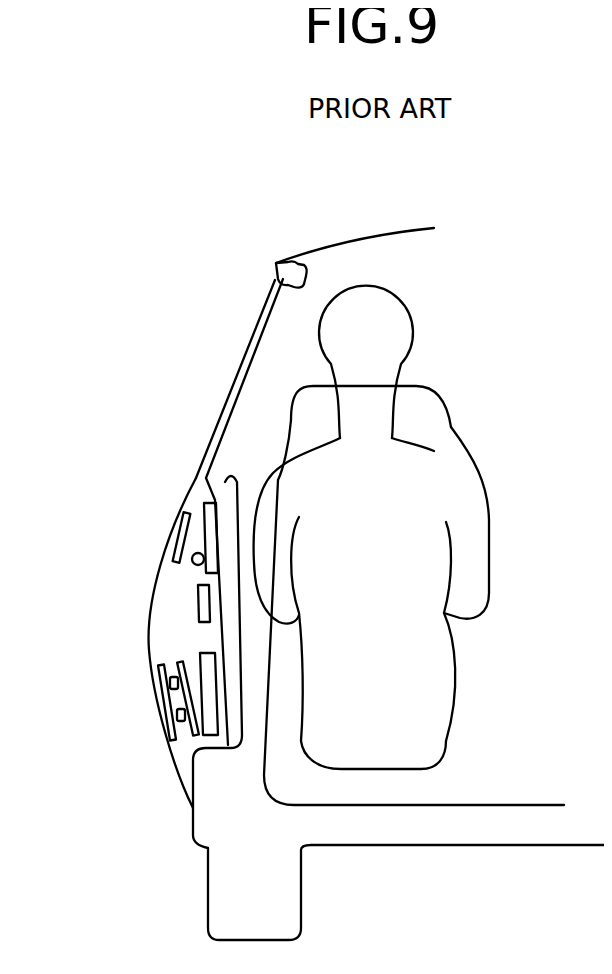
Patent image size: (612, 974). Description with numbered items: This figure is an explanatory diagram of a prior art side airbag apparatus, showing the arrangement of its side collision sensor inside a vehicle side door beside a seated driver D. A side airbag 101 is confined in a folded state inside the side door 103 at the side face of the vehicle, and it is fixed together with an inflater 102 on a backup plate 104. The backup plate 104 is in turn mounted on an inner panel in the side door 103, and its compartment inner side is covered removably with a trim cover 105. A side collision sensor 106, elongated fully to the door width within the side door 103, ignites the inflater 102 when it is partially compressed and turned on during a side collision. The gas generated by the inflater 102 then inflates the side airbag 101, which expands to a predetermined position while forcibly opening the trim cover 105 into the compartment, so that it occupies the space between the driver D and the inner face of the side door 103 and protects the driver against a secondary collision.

The side airbag 101 is at (197, 495).
The inflater 102 is at (185, 548).
The side door 103 is at (141, 592).
The backup plate 104 is at (177, 504).
The trim cover 105 is at (224, 468).
The side collision sensor 106 is at (163, 704).
The driver D is at (546, 425).